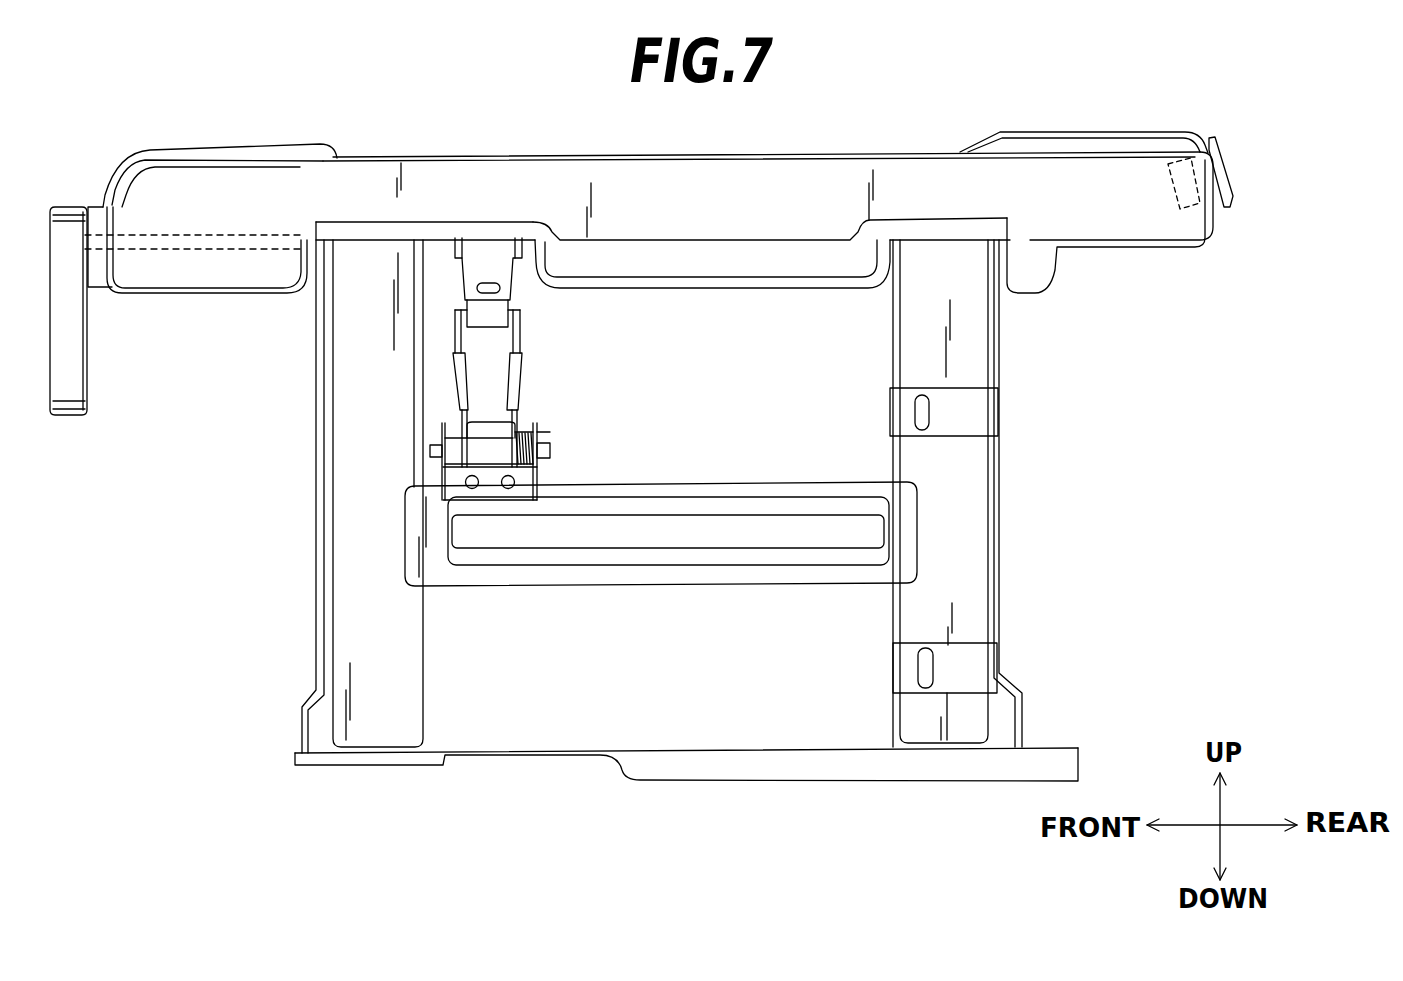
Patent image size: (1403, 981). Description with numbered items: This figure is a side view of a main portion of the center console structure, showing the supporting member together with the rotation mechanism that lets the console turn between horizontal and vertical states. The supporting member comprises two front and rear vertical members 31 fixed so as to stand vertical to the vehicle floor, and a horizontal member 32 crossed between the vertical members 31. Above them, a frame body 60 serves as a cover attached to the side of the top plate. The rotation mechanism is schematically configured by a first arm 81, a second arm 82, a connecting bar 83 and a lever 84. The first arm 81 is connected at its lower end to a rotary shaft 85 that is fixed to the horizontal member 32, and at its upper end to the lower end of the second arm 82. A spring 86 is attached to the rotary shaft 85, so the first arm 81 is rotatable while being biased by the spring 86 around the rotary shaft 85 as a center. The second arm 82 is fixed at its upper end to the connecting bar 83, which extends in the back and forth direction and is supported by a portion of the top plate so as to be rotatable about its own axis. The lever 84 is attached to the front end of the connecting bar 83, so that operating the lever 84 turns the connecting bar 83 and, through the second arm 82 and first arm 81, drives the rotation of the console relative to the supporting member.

The frame body 60 is at (378, 168).
The vertical member 31 is at (340, 412).
The horizontal member 32 is at (648, 575).
The first arm 81 is at (502, 336).
The second arm 82 is at (480, 274).
The connecting bar 83 is at (207, 243).
The lever 84 is at (73, 383).
The rotary shaft 85 is at (430, 450).
The spring 86 is at (528, 430).